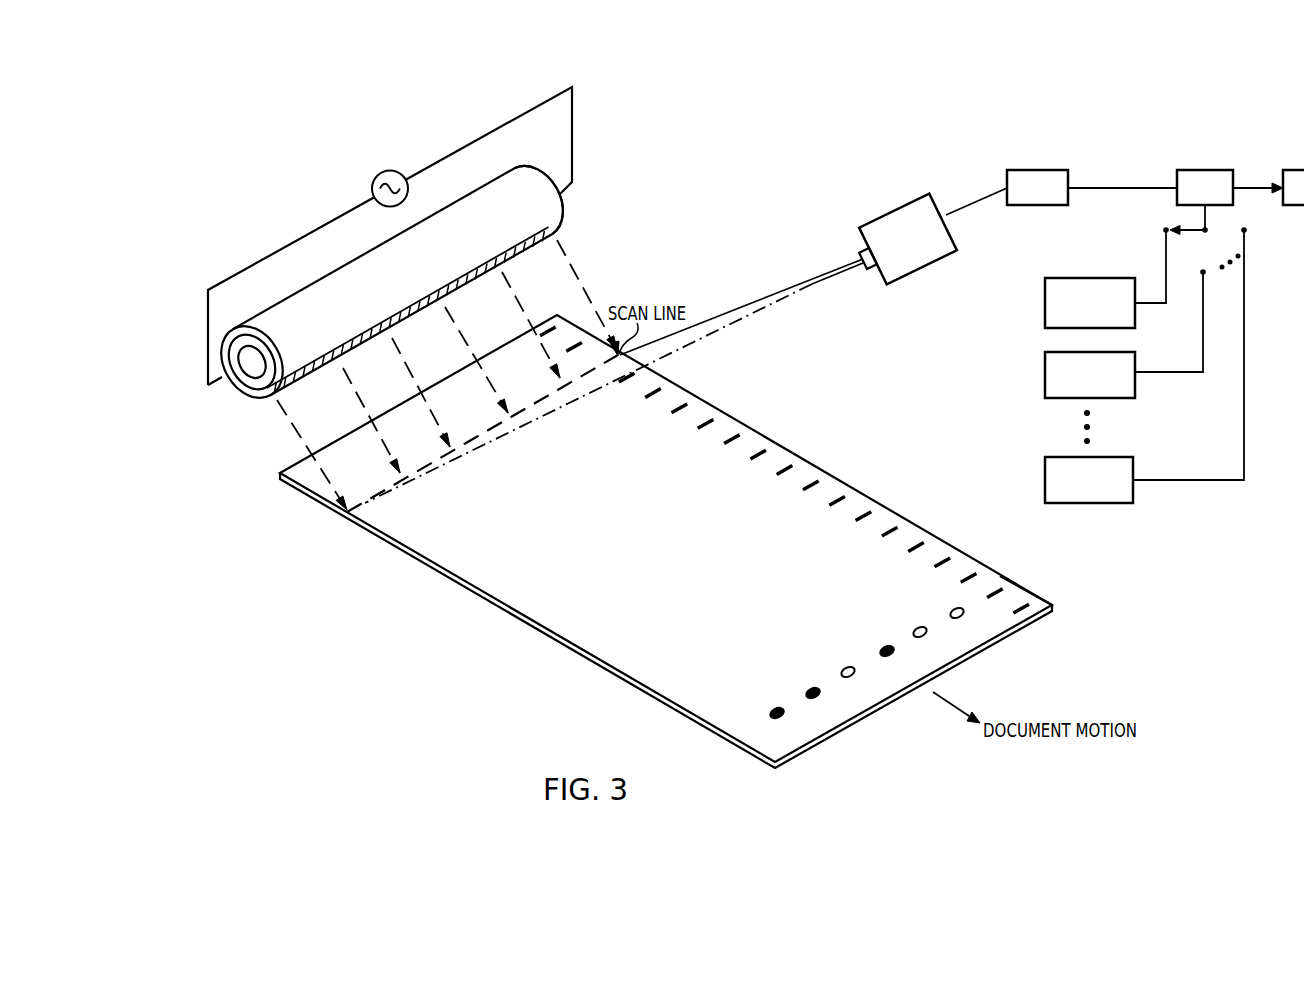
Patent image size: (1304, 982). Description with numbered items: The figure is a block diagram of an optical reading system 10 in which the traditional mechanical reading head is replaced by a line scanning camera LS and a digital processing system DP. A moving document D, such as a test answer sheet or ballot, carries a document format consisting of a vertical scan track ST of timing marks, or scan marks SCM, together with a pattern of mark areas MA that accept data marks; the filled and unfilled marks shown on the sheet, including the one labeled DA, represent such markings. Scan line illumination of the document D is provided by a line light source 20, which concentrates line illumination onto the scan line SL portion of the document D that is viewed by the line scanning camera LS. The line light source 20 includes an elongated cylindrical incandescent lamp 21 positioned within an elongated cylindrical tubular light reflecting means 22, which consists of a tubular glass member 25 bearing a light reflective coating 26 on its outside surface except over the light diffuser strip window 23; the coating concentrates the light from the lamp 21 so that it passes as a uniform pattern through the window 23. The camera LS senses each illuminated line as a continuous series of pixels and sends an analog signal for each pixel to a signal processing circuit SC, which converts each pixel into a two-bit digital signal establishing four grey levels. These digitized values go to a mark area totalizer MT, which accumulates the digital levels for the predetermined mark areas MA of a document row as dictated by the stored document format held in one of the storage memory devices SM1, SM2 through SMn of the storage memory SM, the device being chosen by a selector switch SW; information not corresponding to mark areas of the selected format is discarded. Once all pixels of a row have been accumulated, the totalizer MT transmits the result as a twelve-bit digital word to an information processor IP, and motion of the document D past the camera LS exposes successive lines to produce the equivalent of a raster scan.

The optical reading system 10 is at (939, 434).
The line light source 20 is at (432, 152).
The elongated cylindrical incandescent lamp 21 is at (243, 394).
The light reflecting means 22 is at (343, 272).
The light diffuser strip window 23 is at (419, 314).
The tubular glass member 25 is at (229, 338).
The light reflective coating 26 is at (519, 178).
The scan line SL is at (492, 418).
The document D is at (497, 603).
The scan marks SCM is at (953, 548).
The scan track ST is at (1035, 597).
The data area mark DA is at (768, 713).
The mark area MA is at (840, 672).
The line scanning camera LS is at (888, 214).
The signal processing circuit SC is at (1026, 198).
The mark area totalizer MT is at (1194, 198).
The digital processing system DP is at (1263, 164).
The information processor IP is at (1286, 198).
The storage memory SM is at (1102, 268).
The storage memory device SM1 is at (1044, 284).
The storage memory device SM2 is at (1044, 361).
The storage memory device SMn is at (1044, 469).
The selector switch SW is at (1200, 265).